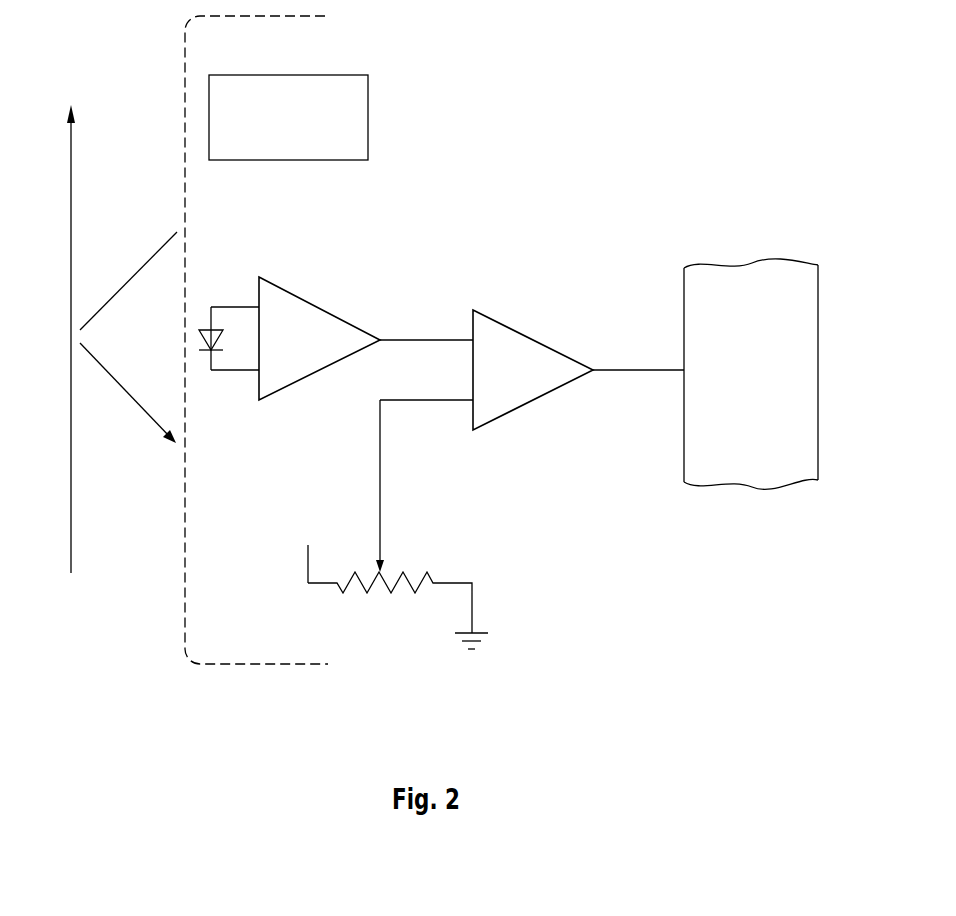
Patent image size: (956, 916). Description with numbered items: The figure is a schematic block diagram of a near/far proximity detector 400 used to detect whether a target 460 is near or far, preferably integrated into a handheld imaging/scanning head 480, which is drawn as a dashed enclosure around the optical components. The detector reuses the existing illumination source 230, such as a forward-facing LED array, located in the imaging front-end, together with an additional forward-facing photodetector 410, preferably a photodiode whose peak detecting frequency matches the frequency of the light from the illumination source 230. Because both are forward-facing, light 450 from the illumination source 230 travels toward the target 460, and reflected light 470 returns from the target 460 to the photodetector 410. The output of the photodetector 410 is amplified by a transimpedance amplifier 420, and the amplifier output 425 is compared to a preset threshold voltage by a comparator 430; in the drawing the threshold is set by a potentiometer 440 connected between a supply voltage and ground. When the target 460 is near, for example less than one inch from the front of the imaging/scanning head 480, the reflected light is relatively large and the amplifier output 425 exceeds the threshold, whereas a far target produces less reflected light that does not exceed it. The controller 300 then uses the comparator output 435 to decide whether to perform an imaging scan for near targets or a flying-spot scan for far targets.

The illumination source 230 is at (266, 75).
The controller 300 is at (720, 270).
The proximity detector 400 is at (584, 197).
The photodetector 410 is at (228, 355).
The transimpedance amplifier 420 is at (312, 301).
The amplifier output 425 is at (426, 326).
The comparator 430 is at (528, 336).
The comparator output 435 is at (638, 356).
The potentiometer 440 is at (393, 586).
The illumination light ray 450 is at (113, 272).
The target 460 is at (70, 364).
The reflected light ray 470 is at (103, 393).
The imaging/scanning head 480 is at (293, 684).